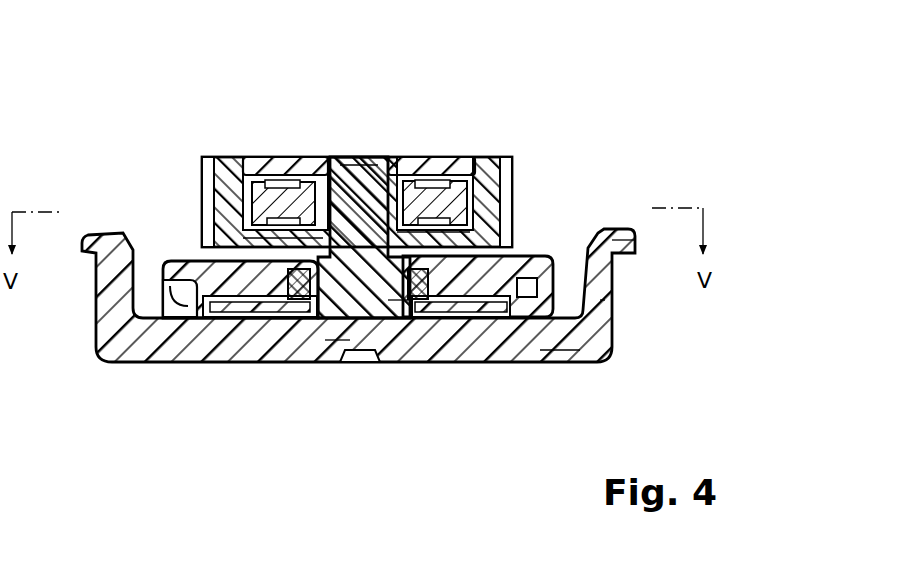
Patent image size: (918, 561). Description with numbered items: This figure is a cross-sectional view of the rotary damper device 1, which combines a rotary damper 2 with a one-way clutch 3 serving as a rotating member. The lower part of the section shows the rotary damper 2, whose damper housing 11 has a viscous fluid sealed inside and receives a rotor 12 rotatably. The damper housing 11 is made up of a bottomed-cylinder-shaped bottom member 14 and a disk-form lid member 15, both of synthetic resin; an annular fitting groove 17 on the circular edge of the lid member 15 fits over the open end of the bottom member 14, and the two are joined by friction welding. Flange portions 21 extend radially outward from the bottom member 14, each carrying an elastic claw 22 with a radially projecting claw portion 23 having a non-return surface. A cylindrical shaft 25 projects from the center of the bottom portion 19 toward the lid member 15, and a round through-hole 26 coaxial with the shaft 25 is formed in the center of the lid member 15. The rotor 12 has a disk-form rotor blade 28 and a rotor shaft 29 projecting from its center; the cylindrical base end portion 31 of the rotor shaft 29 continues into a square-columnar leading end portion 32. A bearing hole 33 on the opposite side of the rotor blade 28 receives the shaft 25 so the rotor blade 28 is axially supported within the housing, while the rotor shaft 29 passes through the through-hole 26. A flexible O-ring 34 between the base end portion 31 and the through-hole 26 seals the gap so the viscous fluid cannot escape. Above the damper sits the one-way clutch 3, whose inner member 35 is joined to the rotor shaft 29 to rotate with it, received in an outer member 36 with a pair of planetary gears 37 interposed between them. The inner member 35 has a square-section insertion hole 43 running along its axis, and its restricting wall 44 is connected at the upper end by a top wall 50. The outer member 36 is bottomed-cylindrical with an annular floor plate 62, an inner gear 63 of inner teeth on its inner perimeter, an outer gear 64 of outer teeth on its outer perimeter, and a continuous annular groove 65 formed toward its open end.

The rotary damper device 1 is at (558, 55).
The rotary damper 2 is at (600, 365).
The one-way clutch 3 is at (387, 159).
The damper housing 11 is at (500, 365).
The rotor 12 is at (368, 262).
The bottom member 14 is at (452, 320).
The lid member 15 is at (165, 280).
The fitting groove 17 is at (165, 303).
The bottom portion 19 is at (184, 376).
The flange portion 21 is at (560, 350).
The elastic claw 22 is at (612, 318).
The claw portion 23 is at (614, 232).
The shaft 25 is at (318, 320).
The through-hole 26 is at (370, 350).
The rotor blade 28 is at (225, 320).
The rotor shaft 29 is at (360, 160).
The base end portion 31 is at (337, 345).
The leading end portion 32 is at (252, 240).
The bearing hole 33 is at (400, 320).
The O-ring 34 is at (258, 320).
The inner member 35 is at (487, 150).
The outer member 36 is at (522, 183).
The planetary gear 37 is at (262, 175).
The insertion hole 43 is at (470, 233).
The restricting wall 44 is at (343, 160).
The top wall 50 is at (293, 160).
The floor plate 62 is at (264, 219).
The inner gear 63 is at (254, 186).
The outer gear 64 is at (207, 158).
The annular groove 65 is at (507, 157).